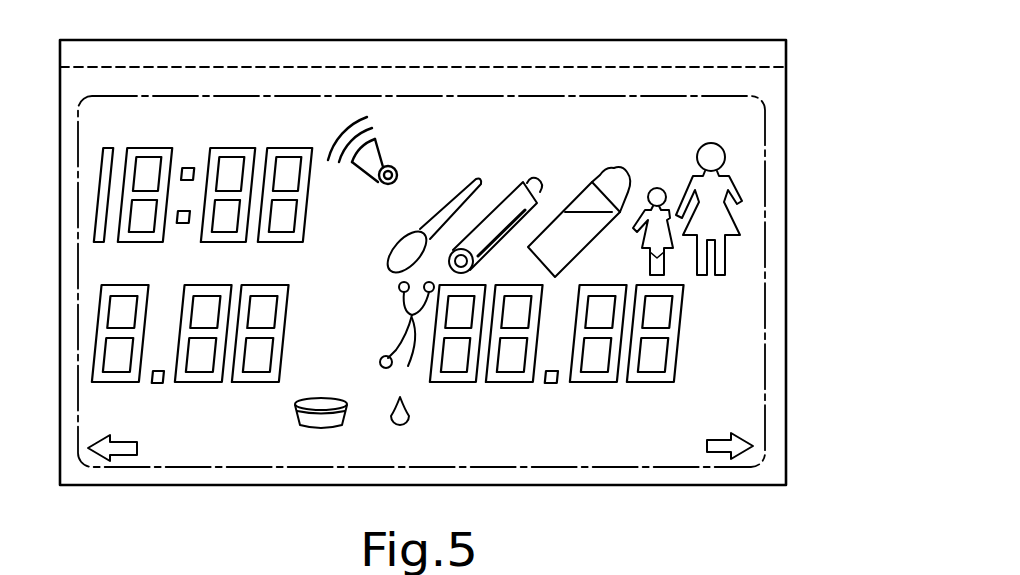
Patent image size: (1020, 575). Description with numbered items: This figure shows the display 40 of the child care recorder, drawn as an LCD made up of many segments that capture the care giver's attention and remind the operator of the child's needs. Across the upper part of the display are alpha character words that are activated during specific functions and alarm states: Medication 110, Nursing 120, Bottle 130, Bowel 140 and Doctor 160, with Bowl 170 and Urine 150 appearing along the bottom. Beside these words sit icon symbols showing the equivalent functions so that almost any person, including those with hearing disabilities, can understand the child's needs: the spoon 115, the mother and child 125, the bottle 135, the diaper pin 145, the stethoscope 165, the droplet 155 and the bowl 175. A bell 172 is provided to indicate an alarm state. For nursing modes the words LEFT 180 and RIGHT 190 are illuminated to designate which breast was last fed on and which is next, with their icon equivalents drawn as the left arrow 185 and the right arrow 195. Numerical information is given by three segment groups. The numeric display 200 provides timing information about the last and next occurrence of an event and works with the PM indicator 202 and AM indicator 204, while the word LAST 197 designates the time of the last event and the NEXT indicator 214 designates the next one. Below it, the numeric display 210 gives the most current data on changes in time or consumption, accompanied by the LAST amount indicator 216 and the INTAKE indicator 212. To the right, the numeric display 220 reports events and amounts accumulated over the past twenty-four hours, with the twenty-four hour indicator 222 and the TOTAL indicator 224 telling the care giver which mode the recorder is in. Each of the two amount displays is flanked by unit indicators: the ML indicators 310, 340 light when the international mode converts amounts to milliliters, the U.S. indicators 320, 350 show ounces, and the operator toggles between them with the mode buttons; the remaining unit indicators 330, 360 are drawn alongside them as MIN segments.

The display 40 is at (680, 83).
The Medication indicator 110 is at (188, 108).
The spoon icon 115 is at (452, 200).
The Nursing indicator 120 is at (458, 108).
The mother and child icon 125 is at (719, 150).
The Bottle indicator 130 is at (598, 108).
The bottle icon 135 is at (578, 256).
The Bowel indicator 140 is at (499, 152).
The diaper pin icon 145 is at (490, 242).
The Urine indicator 150 is at (470, 452).
The droplet icon 155 is at (400, 427).
The Doctor indicator 160 is at (650, 152).
The stethoscope icon 165 is at (407, 338).
The Bowl indicator 170 is at (328, 462).
The bell icon 172 is at (337, 117).
The bowl icon 175 is at (296, 423).
The LEFT indicator 180 is at (190, 458).
The left arrow icon 185 is at (129, 457).
The RIGHT indicator 190 is at (665, 457).
The right arrow icon 195 is at (728, 456).
The LAST indicator 197 is at (92, 265).
The numeric display 200 is at (98, 173).
The PM indicator 202 is at (346, 200).
The AM indicator 204 is at (365, 228).
The numeric display 210 is at (96, 357).
The INTAKE indicator 212 is at (213, 416).
The NEXT indicator 214 is at (262, 263).
The LAST amount indicator 216 is at (90, 400).
The numeric display 220 is at (681, 385).
The 24 HR indicator 222 is at (504, 413).
The TOTAL indicator 224 is at (604, 397).
The ML indicator 310 is at (318, 308).
The U.S. unit indicator 320 is at (326, 340).
The minutes unit indicator 330 is at (333, 372).
The ML indicator 340 is at (725, 301).
The U.S. unit indicator 350 is at (722, 333).
The minutes unit indicator 360 is at (738, 368).